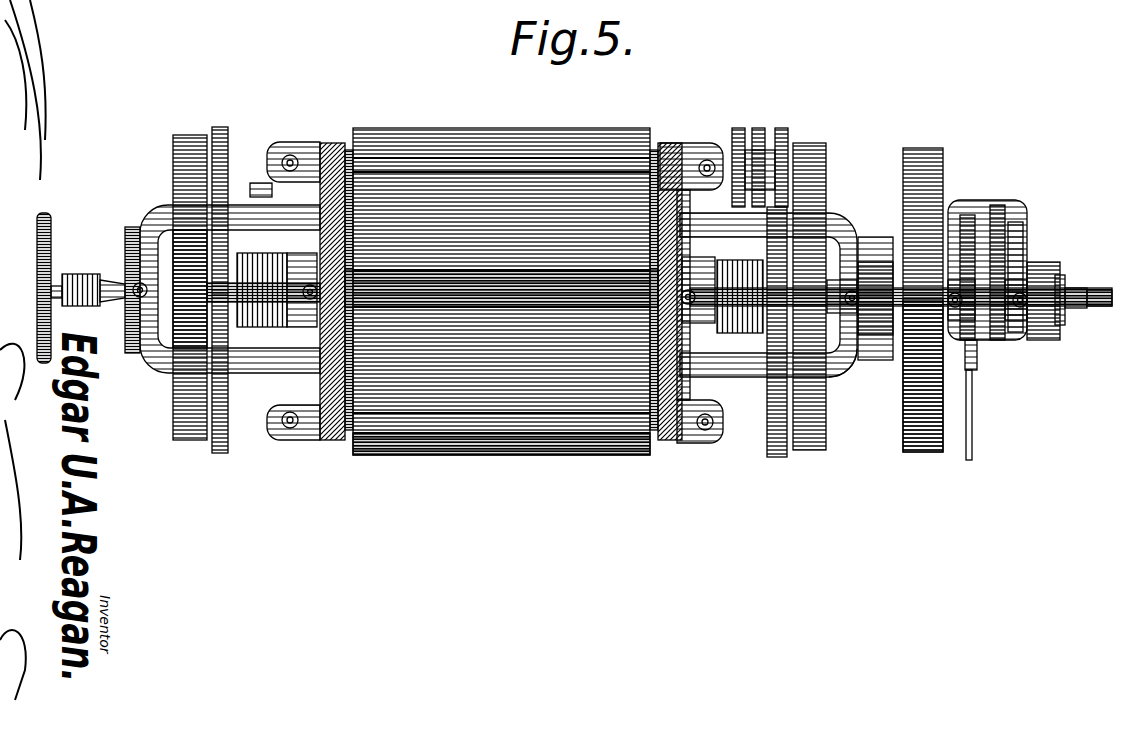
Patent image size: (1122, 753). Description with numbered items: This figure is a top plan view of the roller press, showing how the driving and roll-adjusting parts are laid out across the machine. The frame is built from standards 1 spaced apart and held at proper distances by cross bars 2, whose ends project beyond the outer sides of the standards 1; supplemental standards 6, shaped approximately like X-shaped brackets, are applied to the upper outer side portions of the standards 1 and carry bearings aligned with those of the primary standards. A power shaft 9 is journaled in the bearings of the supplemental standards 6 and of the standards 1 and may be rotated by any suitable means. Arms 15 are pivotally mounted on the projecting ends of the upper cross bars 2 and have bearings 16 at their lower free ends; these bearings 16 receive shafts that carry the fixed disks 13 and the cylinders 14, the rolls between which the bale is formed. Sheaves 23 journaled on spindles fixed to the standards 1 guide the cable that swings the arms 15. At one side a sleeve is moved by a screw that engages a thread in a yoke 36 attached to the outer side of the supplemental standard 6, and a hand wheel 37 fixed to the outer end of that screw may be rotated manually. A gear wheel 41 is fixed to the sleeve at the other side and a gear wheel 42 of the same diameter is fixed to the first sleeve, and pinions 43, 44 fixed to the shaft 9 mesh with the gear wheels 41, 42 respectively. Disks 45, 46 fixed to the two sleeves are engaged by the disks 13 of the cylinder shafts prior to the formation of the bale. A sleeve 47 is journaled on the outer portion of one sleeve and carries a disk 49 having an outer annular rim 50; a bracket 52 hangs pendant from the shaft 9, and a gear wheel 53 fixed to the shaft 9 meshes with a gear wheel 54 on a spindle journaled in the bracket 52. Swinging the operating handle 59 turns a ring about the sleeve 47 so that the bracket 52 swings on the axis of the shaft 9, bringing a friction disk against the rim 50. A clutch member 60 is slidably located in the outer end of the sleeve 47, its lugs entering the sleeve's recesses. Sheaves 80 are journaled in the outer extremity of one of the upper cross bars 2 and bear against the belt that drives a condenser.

The standards 1 is at (360, 333).
The cross bars 2 is at (447, 453).
The supplemental standards 6 is at (833, 367).
The power shaft 9 is at (885, 298).
The fixed disks 13 is at (215, 453).
The cylinders 14 is at (547, 108).
The arms 15 is at (263, 190).
The bearings 16 is at (300, 143).
The sheaves 23 is at (247, 325).
The yoke 36 is at (78, 278).
The hand wheel 37 is at (203, 260).
The gear wheel 41 is at (802, 452).
The gear wheel 42 is at (192, 150).
The pinion 43 is at (803, 283).
The pinion 44 is at (187, 327).
The disk 45 is at (763, 320).
The disk 46 is at (139, 233).
The sleeve 47 is at (1040, 340).
The disk 49 is at (927, 453).
The outer annular rim 50 is at (923, 150).
The bracket 52 is at (1027, 252).
The gear wheel 53 is at (990, 333).
The gear wheel 54 is at (992, 202).
The operating handle 59 is at (975, 395).
The clutch member 60 is at (1060, 327).
The sheaves 80 is at (757, 130).